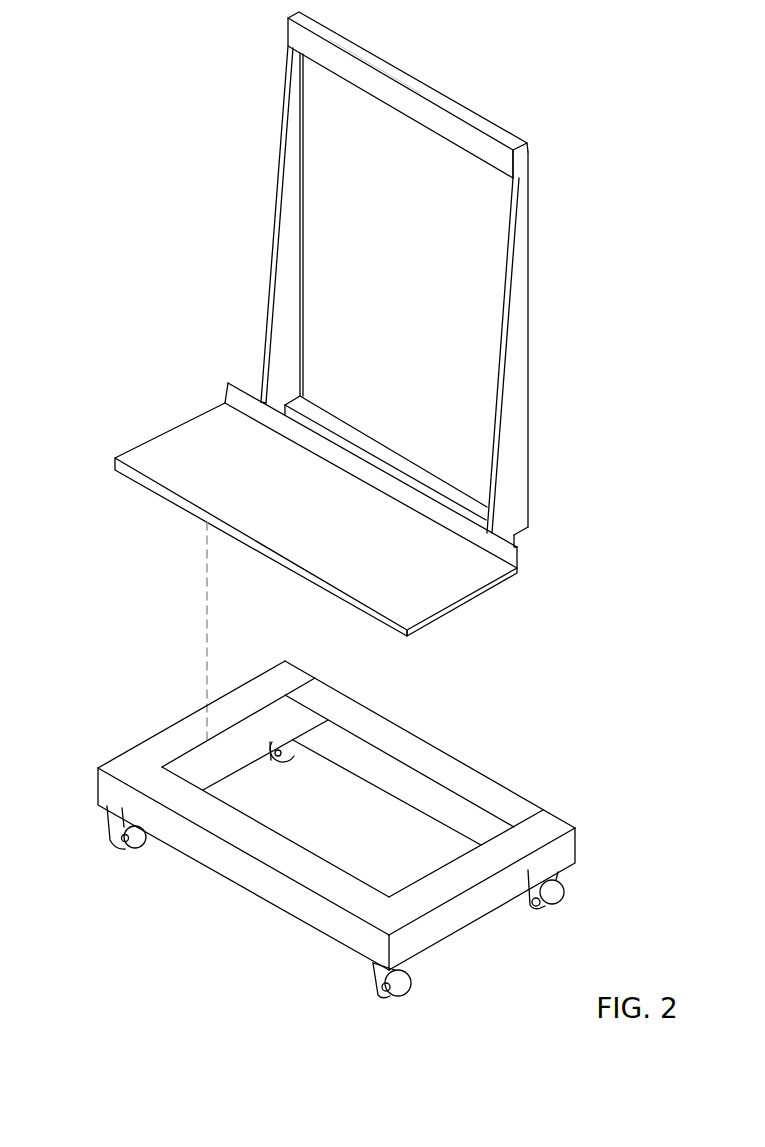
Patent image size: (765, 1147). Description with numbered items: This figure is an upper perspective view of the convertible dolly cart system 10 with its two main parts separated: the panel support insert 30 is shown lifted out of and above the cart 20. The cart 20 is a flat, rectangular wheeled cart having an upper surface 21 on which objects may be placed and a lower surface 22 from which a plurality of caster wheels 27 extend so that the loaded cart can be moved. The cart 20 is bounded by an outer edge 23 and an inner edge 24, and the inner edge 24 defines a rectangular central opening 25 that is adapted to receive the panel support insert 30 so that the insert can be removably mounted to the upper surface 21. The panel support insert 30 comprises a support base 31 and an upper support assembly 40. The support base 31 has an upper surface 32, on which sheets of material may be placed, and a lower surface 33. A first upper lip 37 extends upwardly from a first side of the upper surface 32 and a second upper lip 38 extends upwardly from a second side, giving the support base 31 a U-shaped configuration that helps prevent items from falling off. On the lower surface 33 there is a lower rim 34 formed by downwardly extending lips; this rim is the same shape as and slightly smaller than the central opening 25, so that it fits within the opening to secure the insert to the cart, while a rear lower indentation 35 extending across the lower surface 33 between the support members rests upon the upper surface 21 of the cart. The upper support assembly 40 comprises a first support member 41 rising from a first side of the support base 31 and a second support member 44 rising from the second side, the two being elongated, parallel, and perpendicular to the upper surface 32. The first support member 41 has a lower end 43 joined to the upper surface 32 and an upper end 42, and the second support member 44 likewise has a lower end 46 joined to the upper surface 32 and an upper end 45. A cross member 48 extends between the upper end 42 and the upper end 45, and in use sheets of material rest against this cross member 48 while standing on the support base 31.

The convertible dolly cart system 10 is at (136, 116).
The cart 20 is at (240, 900).
The upper surface 21 is at (485, 790).
The lower surface 22 is at (192, 865).
The outer edge 23 is at (347, 695).
The inner edge 24 is at (370, 770).
The central opening 25 is at (370, 843).
The wheels 27 is at (297, 755).
The panel support insert 30 is at (190, 280).
The support base 31 is at (172, 432).
The upper surface 32 is at (430, 550).
The lower surface 33 is at (448, 620).
The lower rim 34 is at (378, 432).
The rear lower indentation 35 is at (530, 542).
The first upper lip 37 is at (112, 460).
The second upper lip 38 is at (222, 397).
The upper support assembly 40 is at (541, 306).
The first support member 41 is at (270, 205).
The upper end 42 is at (287, 30).
The lower end 43 is at (240, 372).
The second support member 44 is at (530, 385).
The upper end 45 is at (533, 150).
The lower end 46 is at (503, 522).
The cross member 48 is at (433, 85).